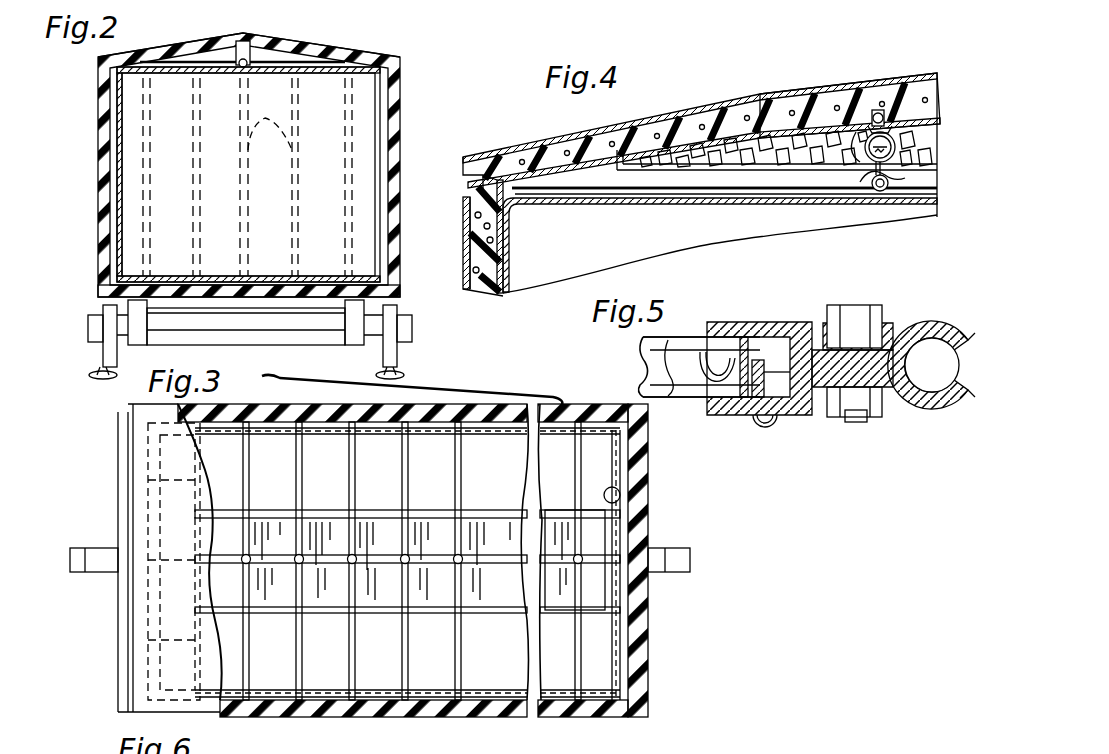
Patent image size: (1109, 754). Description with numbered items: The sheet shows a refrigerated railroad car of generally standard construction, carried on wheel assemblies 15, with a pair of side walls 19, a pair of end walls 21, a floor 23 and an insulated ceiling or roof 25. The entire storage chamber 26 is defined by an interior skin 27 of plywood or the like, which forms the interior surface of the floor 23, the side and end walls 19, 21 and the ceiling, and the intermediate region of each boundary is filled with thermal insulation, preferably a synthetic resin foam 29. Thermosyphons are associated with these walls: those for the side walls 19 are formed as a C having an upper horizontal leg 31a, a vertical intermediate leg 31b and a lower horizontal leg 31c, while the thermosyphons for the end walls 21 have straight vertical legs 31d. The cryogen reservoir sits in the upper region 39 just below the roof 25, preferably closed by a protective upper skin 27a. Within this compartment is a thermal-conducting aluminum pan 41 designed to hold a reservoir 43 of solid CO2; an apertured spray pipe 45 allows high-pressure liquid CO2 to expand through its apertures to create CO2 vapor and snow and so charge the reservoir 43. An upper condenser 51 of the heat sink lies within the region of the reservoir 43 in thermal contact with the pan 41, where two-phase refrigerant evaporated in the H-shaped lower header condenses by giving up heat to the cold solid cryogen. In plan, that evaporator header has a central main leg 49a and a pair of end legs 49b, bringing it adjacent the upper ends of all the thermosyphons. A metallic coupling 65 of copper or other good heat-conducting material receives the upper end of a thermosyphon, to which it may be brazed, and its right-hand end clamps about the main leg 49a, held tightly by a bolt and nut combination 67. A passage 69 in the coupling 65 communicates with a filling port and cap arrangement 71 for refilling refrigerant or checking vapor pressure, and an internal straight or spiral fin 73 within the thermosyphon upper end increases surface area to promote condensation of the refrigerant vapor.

In FIG. 2, the wheel assemblies 15 is at (410, 320).
In FIG. 2, the side walls 19 is at (102, 98).
In FIG. 3, the side walls 19 is at (323, 717).
In FIG. 4, the side walls 19 is at (466, 242).
In FIG. 3, the end walls 21 is at (125, 603).
In FIG. 2, the floor 23 is at (98, 293).
In FIG. 2, the roof 25 is at (178, 46).
In FIG. 4, the roof 25 is at (663, 120).
In FIG. 2, the storage chamber 26 is at (233, 172).
In FIG. 4, the storage chamber 26 is at (600, 262).
In FIG. 2, the interior skin 27 is at (373, 173).
In FIG. 4, the interior skin 27 is at (516, 252).
In FIG. 4, the protective upper skin 27a is at (638, 205).
In FIG. 3, the synthetic resin foam 29 is at (425, 720).
In FIG. 4, the synthetic resin foam 29 is at (762, 94).
In FIG. 2, the upper horizontal leg 31a is at (183, 70).
In FIG. 4, the upper horizontal leg 31a is at (585, 205).
In FIG. 5, the upper horizontal leg 31a is at (647, 337).
In FIG. 2, the vertical intermediate leg 31b is at (103, 145).
In FIG. 4, the vertical intermediate leg 31b is at (515, 226).
In FIG. 2, the lower horizontal leg 31c is at (210, 275).
In FIG. 2, the straight vertical legs 31d is at (271, 122).
In FIG. 4, the upper region 39 is at (912, 130).
In FIG. 2, the thermal-conducting metal pan 41 is at (283, 58).
In FIG. 4, the thermal-conducting metal pan 41 is at (705, 175).
In FIG. 4, the reservoir of solid CO2 43 is at (760, 172).
In FIG. 4, the apertured spray pipe 45 is at (878, 132).
In FIG. 3, the central main leg 49a is at (367, 555).
In FIG. 4, the central main leg 49a is at (878, 198).
In FIG. 5, the central main leg 49a is at (915, 428).
In FIG. 3, the end legs 49b is at (195, 482).
In FIG. 4, the upper condenser 51 is at (868, 105).
In FIG. 5, the metallic coupling 65 is at (775, 378).
In FIG. 5, the bolt and nut combination 67 is at (833, 417).
In FIG. 5, the passage 69 is at (768, 392).
In FIG. 5, the filling port and cap arrangement 71 is at (787, 433).
In FIG. 5, the internal fin 73 is at (692, 397).